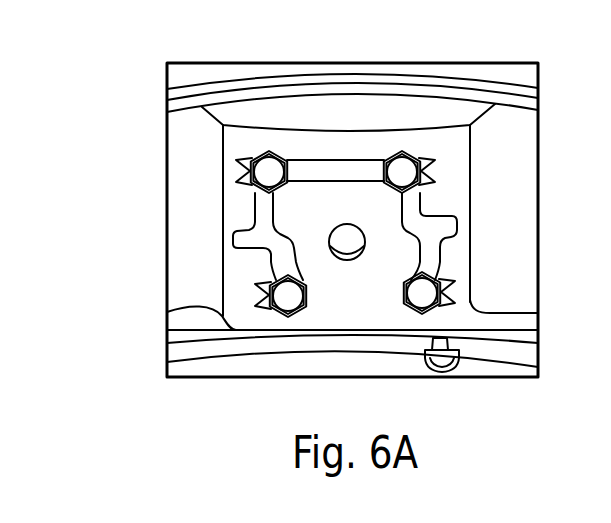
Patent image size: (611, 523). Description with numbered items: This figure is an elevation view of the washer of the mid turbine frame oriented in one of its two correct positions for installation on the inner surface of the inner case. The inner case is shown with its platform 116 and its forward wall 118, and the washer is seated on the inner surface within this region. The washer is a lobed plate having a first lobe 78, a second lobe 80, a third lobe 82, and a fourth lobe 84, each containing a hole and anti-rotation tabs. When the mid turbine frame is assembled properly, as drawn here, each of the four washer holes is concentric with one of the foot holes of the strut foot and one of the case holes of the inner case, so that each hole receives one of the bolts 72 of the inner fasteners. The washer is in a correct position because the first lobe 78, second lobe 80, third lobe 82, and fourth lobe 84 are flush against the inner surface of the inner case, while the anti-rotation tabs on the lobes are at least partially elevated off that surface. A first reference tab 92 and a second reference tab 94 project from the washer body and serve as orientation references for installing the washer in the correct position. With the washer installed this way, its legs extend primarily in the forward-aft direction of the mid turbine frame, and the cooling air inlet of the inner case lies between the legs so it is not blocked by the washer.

The bolt 72 is at (262, 176).
The first lobe 78 is at (420, 150).
The second lobe 80 is at (397, 297).
The fourth lobe 84 is at (308, 290).
The third lobe 82 is at (288, 148).
The first reference tab 92 is at (460, 224).
The second reference tab 94 is at (246, 228).
The platform 116 is at (457, 167).
The forward wall 118 is at (507, 341).